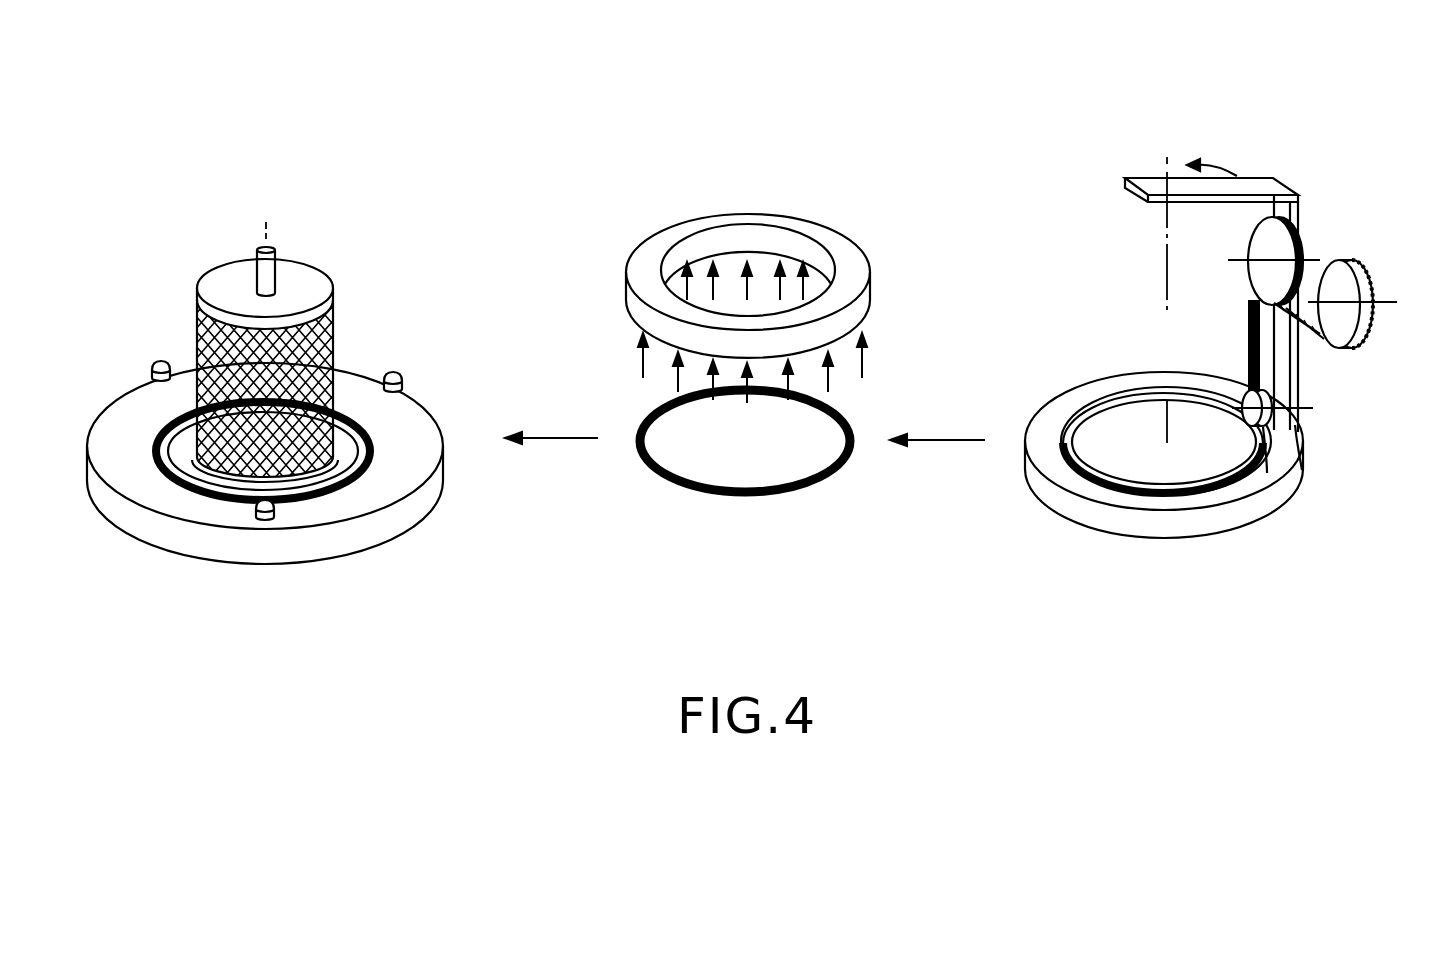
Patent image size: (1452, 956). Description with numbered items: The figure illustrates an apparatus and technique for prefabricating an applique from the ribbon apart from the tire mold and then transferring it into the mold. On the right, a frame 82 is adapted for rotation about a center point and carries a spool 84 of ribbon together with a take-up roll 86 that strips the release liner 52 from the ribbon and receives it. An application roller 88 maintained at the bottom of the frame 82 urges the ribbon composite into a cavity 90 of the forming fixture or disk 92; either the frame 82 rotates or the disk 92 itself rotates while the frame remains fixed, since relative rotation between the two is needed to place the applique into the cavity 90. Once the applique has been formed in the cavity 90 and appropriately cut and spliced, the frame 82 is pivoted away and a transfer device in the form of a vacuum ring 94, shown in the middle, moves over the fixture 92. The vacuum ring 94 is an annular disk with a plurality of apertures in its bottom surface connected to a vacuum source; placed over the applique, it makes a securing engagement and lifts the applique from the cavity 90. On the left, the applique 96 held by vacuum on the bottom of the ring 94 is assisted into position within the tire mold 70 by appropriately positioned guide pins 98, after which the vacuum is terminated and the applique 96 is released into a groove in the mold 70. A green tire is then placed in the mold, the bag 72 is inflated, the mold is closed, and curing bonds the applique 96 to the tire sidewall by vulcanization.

The tire mold 70 is at (318, 540).
The bag 72 is at (335, 306).
The guide pins 98 is at (160, 366).
The applique 96 is at (213, 493).
The vacuum ring 94 is at (693, 227).
The frame 82 is at (1152, 187).
The spool 84 is at (1273, 250).
The take-up roll 86 is at (1339, 280).
The release liner 52 is at (1311, 340).
The application roller 88 is at (1265, 428).
The cavity 90 is at (1084, 398).
The forming fixture or disk 92 is at (1172, 523).